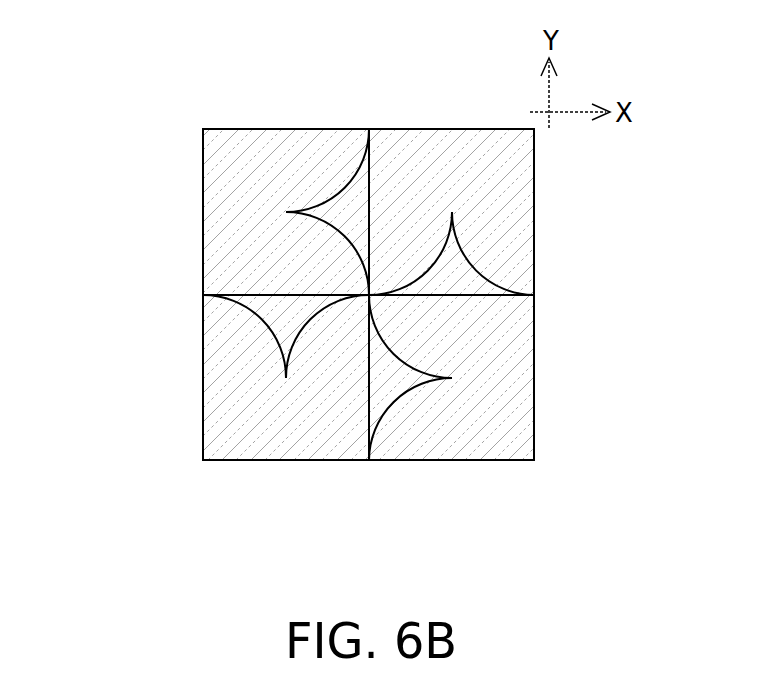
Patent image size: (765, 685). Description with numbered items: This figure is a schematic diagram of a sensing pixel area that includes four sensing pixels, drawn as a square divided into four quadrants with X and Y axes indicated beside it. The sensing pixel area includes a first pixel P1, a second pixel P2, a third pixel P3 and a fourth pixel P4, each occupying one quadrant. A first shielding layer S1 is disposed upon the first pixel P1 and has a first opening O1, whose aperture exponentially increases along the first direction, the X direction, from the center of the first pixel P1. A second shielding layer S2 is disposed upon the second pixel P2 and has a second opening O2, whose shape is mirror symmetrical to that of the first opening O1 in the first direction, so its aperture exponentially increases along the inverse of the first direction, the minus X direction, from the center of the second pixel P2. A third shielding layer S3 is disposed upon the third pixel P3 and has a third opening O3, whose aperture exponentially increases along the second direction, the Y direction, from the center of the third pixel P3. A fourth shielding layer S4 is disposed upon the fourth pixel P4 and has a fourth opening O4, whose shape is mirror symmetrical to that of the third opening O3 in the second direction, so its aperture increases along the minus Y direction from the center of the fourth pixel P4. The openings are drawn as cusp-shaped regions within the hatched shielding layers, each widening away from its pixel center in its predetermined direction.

The first shielding layer S1 is at (243, 180).
The second shielding layer S2 is at (497, 392).
The third shielding layer S3 is at (233, 418).
The fourth shielding layer S4 is at (500, 177).
The first opening O1 is at (345, 215).
The second opening O2 is at (395, 373).
The third opening O3 is at (288, 308).
The fourth opening O4 is at (450, 277).
The first pixel P1 is at (203, 212).
The second pixel P2 is at (534, 377).
The third pixel P3 is at (203, 385).
The fourth pixel P4 is at (534, 209).